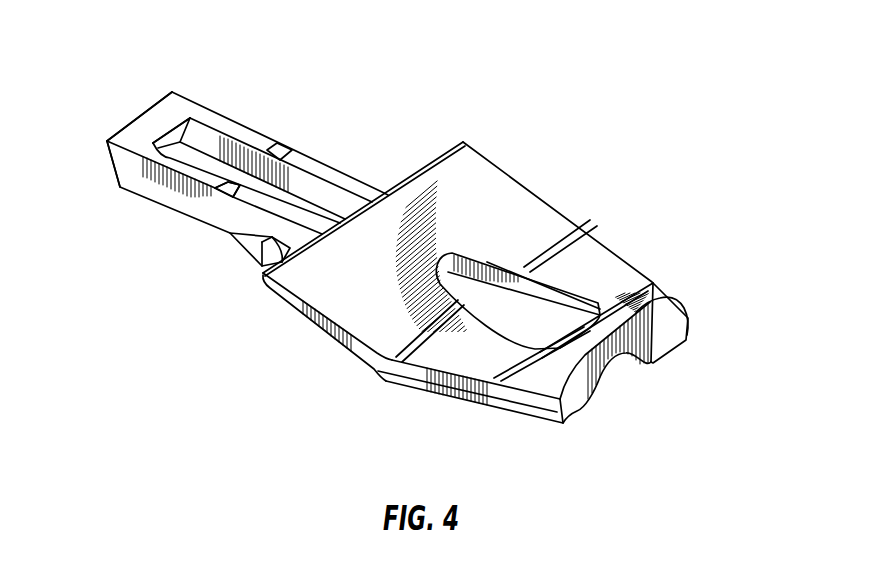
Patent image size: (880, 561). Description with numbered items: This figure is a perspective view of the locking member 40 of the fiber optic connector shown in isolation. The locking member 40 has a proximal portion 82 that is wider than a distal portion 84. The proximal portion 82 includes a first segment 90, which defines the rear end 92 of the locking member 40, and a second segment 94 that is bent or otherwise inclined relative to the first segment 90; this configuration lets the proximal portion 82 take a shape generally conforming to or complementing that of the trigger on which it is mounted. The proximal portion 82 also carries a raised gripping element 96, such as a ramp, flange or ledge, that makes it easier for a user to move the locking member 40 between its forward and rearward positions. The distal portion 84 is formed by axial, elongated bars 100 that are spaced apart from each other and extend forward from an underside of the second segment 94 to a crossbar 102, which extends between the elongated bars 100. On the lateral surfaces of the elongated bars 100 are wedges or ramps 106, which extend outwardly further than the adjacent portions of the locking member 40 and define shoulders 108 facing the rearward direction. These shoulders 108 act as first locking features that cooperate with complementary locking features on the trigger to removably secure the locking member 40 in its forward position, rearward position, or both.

The locking member 40 is at (528, 114).
The proximal portion 82 is at (723, 301).
The distal portion 84 is at (400, 173).
The first segment 90 is at (562, 438).
The rear end 92 is at (577, 414).
The second segment 94 is at (363, 393).
The raised gripping element 96 is at (673, 343).
The elongated bars 100 is at (207, 106).
The crossbar 102 is at (134, 118).
The ramps 106 is at (243, 237).
The shoulders 108 is at (262, 266).